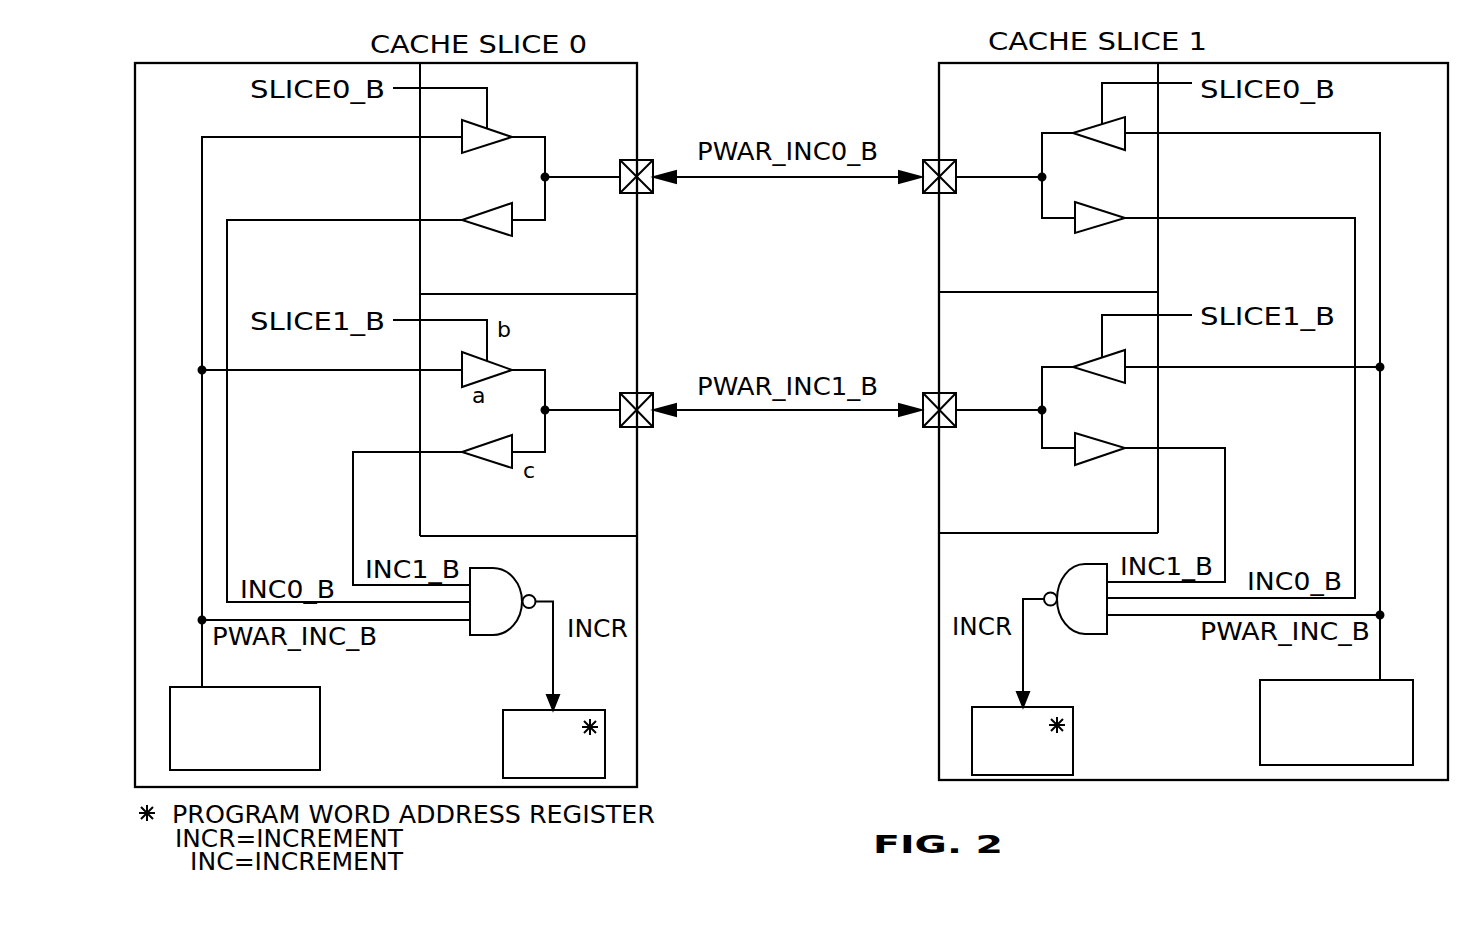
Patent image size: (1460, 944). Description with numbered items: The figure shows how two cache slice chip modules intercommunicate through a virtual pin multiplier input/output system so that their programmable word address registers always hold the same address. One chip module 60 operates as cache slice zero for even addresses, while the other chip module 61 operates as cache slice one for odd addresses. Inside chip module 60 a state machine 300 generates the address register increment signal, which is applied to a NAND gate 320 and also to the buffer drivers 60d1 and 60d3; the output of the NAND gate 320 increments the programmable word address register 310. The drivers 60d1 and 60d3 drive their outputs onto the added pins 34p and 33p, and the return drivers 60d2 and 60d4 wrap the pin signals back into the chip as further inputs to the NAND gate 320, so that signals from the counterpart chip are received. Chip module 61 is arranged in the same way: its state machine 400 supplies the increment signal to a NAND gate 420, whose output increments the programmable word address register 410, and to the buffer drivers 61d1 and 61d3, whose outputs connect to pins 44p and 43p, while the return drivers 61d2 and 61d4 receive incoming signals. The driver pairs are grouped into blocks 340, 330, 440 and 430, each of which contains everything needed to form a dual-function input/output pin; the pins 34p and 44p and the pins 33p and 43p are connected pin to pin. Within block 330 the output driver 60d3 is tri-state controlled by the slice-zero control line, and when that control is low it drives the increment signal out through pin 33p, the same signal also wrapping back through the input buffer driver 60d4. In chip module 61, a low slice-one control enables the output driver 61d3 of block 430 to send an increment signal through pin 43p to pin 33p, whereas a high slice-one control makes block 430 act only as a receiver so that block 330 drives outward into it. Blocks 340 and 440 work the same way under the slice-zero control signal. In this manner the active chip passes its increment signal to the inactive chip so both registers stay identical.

The cache slice chip module 60 is at (238, 62).
The cache slice chip module 61 is at (1342, 55).
The input/output pin block 340 is at (620, 261).
The input/output pin block 330 is at (620, 503).
The input/output pin block 440 is at (1007, 259).
The input/output pin block 430 is at (1007, 492).
The buffer driver 60d1 is at (487, 130).
The return driver 60d2 is at (495, 233).
The output driver 60d3 is at (492, 363).
The input buffer driver 60d4 is at (503, 462).
The buffer driver 61d1 is at (1087, 127).
The return driver 61d2 is at (1100, 220).
The output driver 61d3 is at (1087, 362).
The return driver 61d4 is at (1100, 453).
The virtual multiplier pin 34p is at (650, 193).
The virtual multiplier pin 33p is at (650, 427).
The virtual multiplier pin 44p is at (930, 193).
The virtual multiplier pin 43p is at (930, 427).
The NAND gate 320 is at (507, 575).
The NAND gate 420 is at (1067, 577).
The programmable word address register 310 is at (513, 707).
The programmable word address register 410 is at (1073, 757).
The state machine 300 is at (320, 728).
The state machine 400 is at (1260, 703).